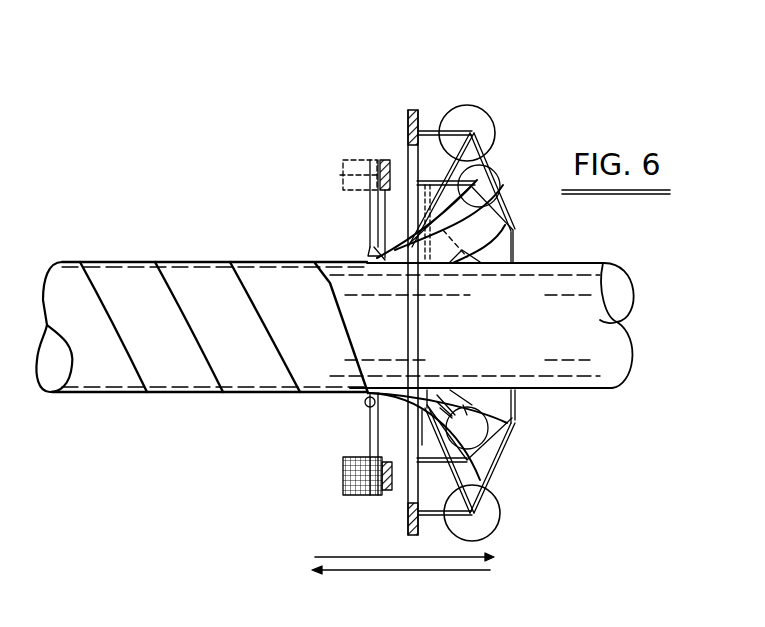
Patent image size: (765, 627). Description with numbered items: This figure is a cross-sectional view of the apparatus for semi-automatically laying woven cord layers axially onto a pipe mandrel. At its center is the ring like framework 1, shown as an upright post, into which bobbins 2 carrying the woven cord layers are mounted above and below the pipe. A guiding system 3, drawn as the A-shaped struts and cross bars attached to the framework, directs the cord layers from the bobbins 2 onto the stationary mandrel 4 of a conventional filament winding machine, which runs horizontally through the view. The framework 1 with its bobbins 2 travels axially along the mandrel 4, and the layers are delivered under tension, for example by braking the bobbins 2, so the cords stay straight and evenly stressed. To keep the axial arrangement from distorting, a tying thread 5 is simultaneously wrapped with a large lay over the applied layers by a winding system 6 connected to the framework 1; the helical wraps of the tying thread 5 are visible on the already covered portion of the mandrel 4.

The ring like framework 1 is at (408, 115).
The bobbins 2 is at (473, 116).
The guiding system 3 is at (445, 130).
The stationary mandrel 4 is at (617, 322).
The tying thread 5 is at (353, 340).
The winding system 6 is at (377, 215).